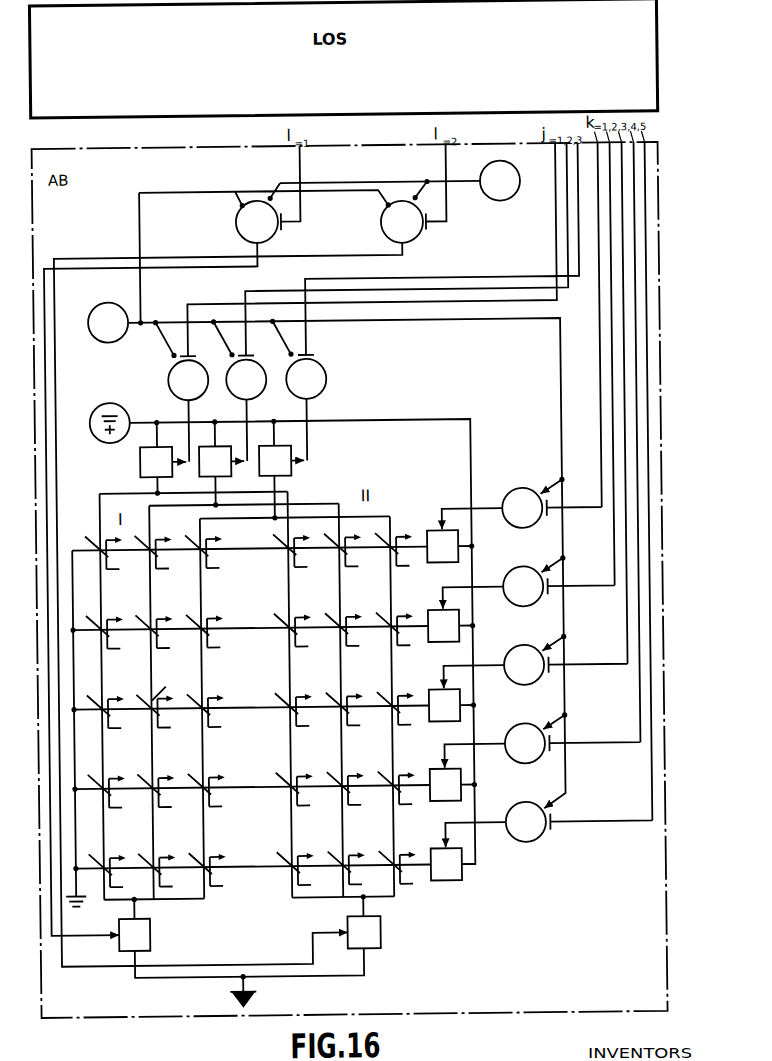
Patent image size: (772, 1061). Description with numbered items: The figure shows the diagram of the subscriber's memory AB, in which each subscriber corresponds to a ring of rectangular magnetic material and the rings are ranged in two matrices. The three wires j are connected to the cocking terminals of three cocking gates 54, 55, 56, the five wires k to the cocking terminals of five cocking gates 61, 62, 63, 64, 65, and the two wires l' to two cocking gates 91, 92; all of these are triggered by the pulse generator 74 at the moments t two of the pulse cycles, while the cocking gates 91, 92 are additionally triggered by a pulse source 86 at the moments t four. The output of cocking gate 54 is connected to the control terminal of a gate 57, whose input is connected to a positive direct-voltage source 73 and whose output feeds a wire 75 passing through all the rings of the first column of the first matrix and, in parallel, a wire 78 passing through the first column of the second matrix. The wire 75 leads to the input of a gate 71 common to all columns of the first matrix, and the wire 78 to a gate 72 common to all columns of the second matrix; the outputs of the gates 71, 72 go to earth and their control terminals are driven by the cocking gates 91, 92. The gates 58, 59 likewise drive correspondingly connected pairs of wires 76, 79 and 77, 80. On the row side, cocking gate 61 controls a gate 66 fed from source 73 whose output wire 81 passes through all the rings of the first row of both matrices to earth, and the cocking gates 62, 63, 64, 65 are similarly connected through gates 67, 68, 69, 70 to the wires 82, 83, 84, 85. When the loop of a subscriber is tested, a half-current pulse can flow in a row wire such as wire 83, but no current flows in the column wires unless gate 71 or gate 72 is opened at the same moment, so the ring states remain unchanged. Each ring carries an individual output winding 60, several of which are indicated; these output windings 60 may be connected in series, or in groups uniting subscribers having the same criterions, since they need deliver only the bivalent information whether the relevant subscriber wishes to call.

The cocking gate 54 is at (171, 370).
The cocking gate 55 is at (231, 370).
The cocking gate 56 is at (291, 370).
The gate 57 is at (141, 460).
The gate 58 is at (200, 460).
The gate 59 is at (260, 460).
The output winding 60 is at (212, 566).
The cocking gate 61 is at (517, 492).
The cocking gate 62 is at (517, 571).
The cocking gate 63 is at (516, 650).
The cocking gate 64 is at (515, 731).
The cocking gate 65 is at (514, 810).
The gate 66 is at (430, 531).
The gate 67 is at (431, 611).
The gate 68 is at (431, 690).
The gate 69 is at (429, 770).
The gate 70 is at (429, 849).
The gate 71 is at (150, 941).
The gate 72 is at (380, 941).
The positive direct-voltage source 73 is at (95, 405).
The pulse generator 74 is at (97, 305).
The wire 75 is at (100, 609).
The wire 76 is at (150, 609).
The wire 77 is at (201, 609).
The wire 78 is at (289, 609).
The wire 79 is at (340, 609).
The wire 80 is at (391, 596).
The wire 81 is at (249, 546).
The wire 82 is at (249, 626).
The wire 83 is at (241, 706).
The wire 84 is at (251, 787).
The wire 85 is at (228, 866).
The pulse source 86 is at (514, 196).
The cocking gate 91 is at (239, 222).
The cocking gate 92 is at (384, 223).